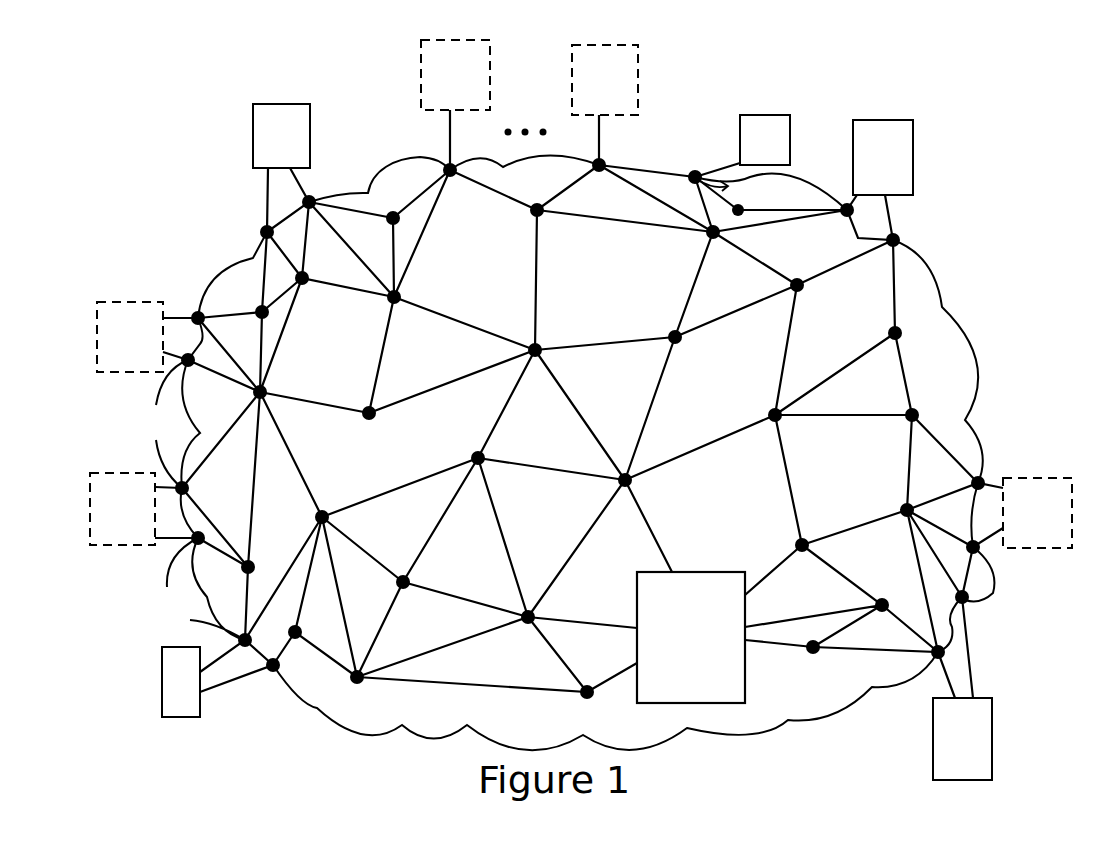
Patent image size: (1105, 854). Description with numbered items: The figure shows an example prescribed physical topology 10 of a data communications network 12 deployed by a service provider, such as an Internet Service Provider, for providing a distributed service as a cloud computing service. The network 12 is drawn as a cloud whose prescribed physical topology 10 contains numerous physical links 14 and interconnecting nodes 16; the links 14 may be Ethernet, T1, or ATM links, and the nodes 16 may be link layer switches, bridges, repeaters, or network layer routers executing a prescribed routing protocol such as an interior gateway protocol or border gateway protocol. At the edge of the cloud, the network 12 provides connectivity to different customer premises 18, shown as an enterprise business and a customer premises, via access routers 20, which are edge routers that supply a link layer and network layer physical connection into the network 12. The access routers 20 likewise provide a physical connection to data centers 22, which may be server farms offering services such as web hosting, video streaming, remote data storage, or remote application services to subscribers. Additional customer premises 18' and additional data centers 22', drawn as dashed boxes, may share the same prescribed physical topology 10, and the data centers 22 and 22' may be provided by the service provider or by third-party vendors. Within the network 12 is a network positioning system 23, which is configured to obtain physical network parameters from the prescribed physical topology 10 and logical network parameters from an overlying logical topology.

The prescribed physical topology 10 is at (390, 186).
The data communications network 12 is at (219, 274).
The physical link 14 is at (440, 383).
The interconnecting node 16 is at (540, 343).
The customer premises 18 is at (611, 414).
The additional customer premises 18' is at (551, 277).
The access router 20 is at (272, 672).
The data center 22 is at (513, 384).
The additional data center 22' is at (622, 62).
The network positioning system 23 is at (691, 637).